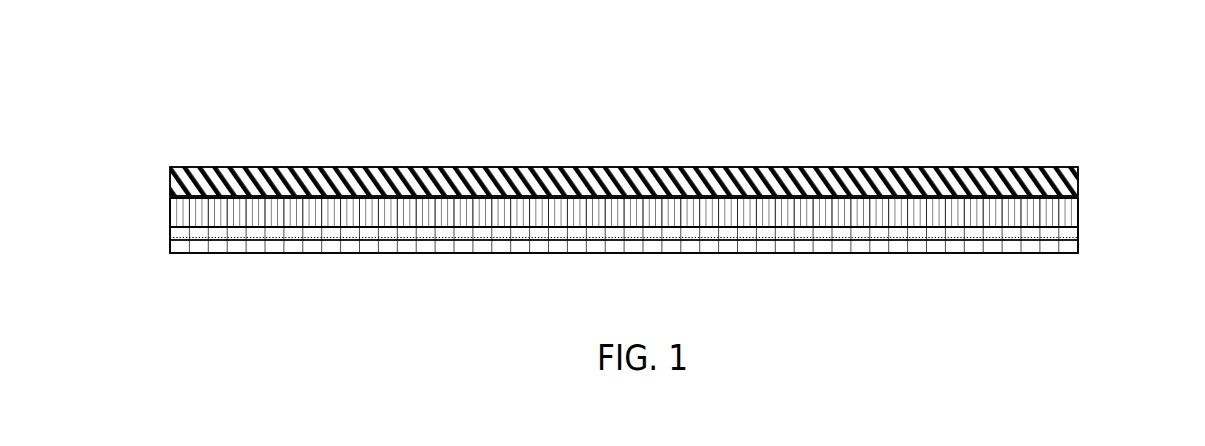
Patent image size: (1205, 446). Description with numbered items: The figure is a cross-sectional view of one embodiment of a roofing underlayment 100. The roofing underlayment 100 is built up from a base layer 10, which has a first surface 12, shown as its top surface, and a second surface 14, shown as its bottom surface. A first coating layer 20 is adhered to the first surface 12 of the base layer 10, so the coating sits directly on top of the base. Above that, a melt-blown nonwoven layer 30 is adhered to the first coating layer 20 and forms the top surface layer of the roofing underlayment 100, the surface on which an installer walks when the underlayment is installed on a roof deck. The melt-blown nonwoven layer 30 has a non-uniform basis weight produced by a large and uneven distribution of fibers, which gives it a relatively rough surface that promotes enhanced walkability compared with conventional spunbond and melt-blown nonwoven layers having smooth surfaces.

The roofing underlayment 100 is at (615, 184).
The base layer 10 is at (614, 253).
The first surface 12 is at (200, 224).
The second surface 14 is at (220, 253).
The first coating layer 20 is at (1079, 212).
The melt-blown nonwoven layer 30 is at (195, 168).